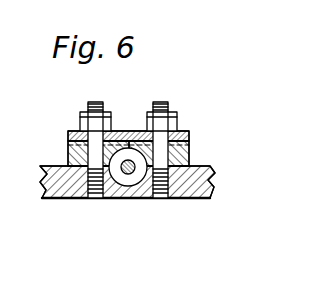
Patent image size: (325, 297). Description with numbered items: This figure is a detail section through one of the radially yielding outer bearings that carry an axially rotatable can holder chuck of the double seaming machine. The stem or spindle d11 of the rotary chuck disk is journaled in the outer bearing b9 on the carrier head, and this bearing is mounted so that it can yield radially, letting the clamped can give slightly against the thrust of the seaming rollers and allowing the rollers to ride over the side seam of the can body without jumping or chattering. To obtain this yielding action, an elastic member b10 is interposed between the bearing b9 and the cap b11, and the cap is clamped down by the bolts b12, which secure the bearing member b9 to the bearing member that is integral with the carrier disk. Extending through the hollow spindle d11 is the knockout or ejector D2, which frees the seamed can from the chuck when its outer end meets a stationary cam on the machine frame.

The radially yielding outer bearing b9 is at (190, 143).
The elastic member b10 is at (68, 142).
The cap b11 is at (118, 131).
The bolts b12 is at (173, 88).
The knockout or ejector D2 is at (112, 184).
The stem or spindle of the rotary chuck disk d11 is at (127, 186).